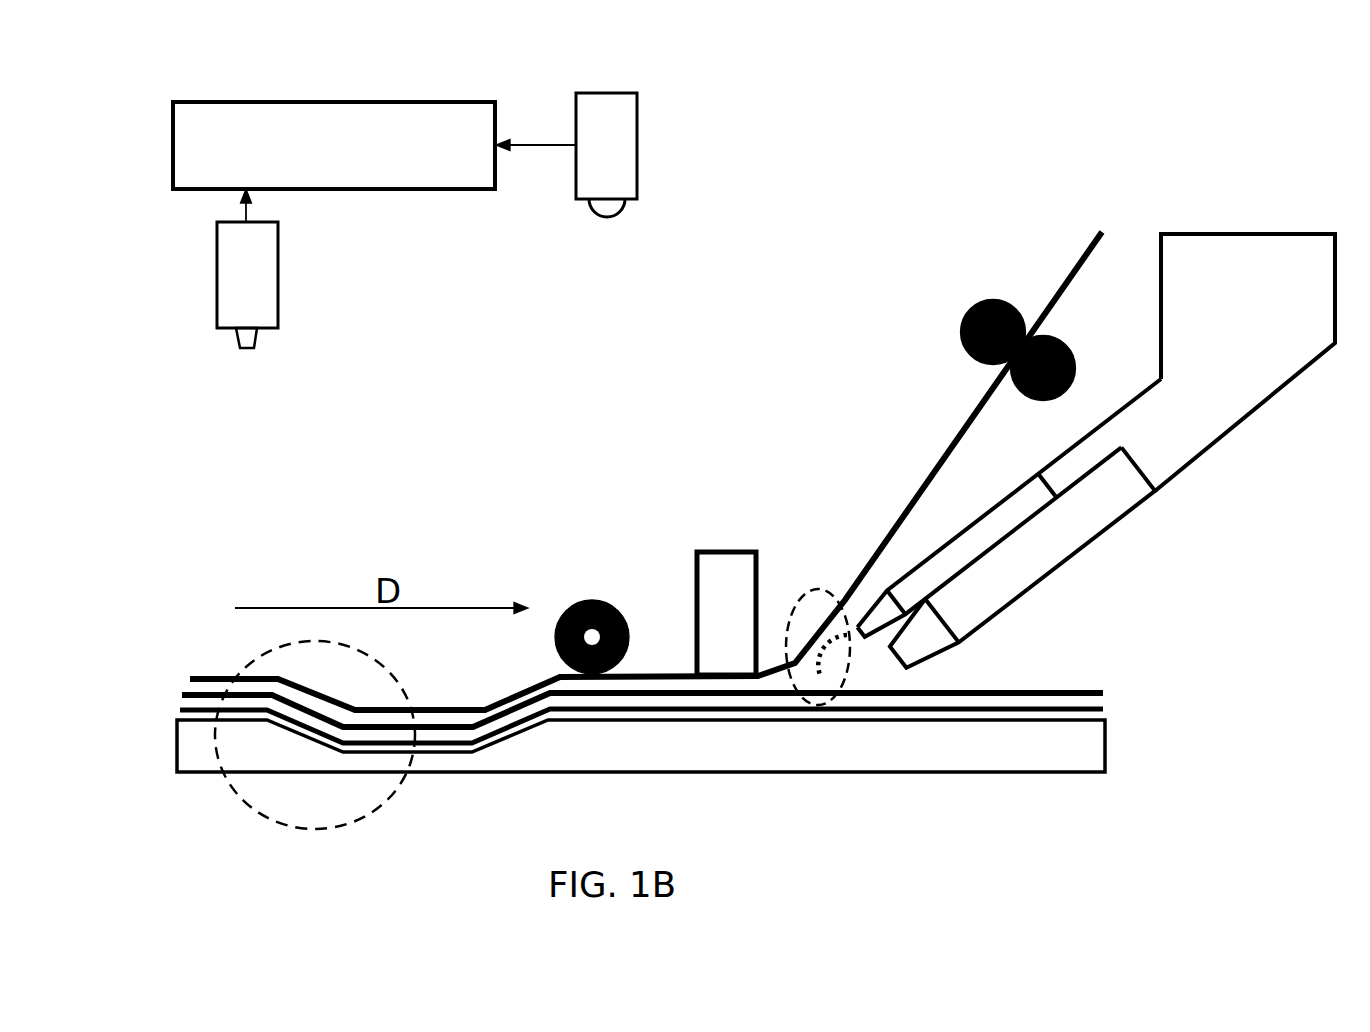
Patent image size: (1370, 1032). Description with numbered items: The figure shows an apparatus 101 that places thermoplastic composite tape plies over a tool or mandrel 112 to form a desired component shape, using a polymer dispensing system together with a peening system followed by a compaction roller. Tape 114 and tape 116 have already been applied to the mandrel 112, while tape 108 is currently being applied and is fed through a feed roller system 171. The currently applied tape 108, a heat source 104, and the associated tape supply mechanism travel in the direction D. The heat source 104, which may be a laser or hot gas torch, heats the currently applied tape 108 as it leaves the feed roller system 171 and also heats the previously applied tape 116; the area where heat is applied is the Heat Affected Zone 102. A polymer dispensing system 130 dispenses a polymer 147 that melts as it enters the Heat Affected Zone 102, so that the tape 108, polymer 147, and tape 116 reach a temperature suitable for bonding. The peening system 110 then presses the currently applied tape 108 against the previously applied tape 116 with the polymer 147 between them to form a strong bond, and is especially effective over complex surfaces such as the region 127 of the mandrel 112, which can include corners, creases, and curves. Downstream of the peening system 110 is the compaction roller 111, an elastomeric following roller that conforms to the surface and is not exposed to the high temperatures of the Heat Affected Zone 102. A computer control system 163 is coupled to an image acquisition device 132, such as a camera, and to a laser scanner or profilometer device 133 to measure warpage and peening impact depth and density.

The apparatus 101 is at (786, 176).
The Heat Affected Zone 102 is at (822, 588).
The heat source 104 is at (1119, 497).
The tape 108 is at (940, 430).
The peening system 110 is at (695, 583).
The compaction roller 111 is at (553, 618).
The tool (mandrel) 112 is at (878, 752).
The tape 114 is at (1103, 708).
The tape 116 is at (1040, 687).
The region 127 is at (292, 828).
The polymer dispensing system 130 is at (1228, 245).
The image acquisition device 132 is at (608, 123).
The laser scanner, laser profilometer or other suitable device 133 is at (257, 272).
The polymer 147 is at (832, 680).
The computer control system 163 is at (295, 112).
The feed roller system 171 is at (997, 300).